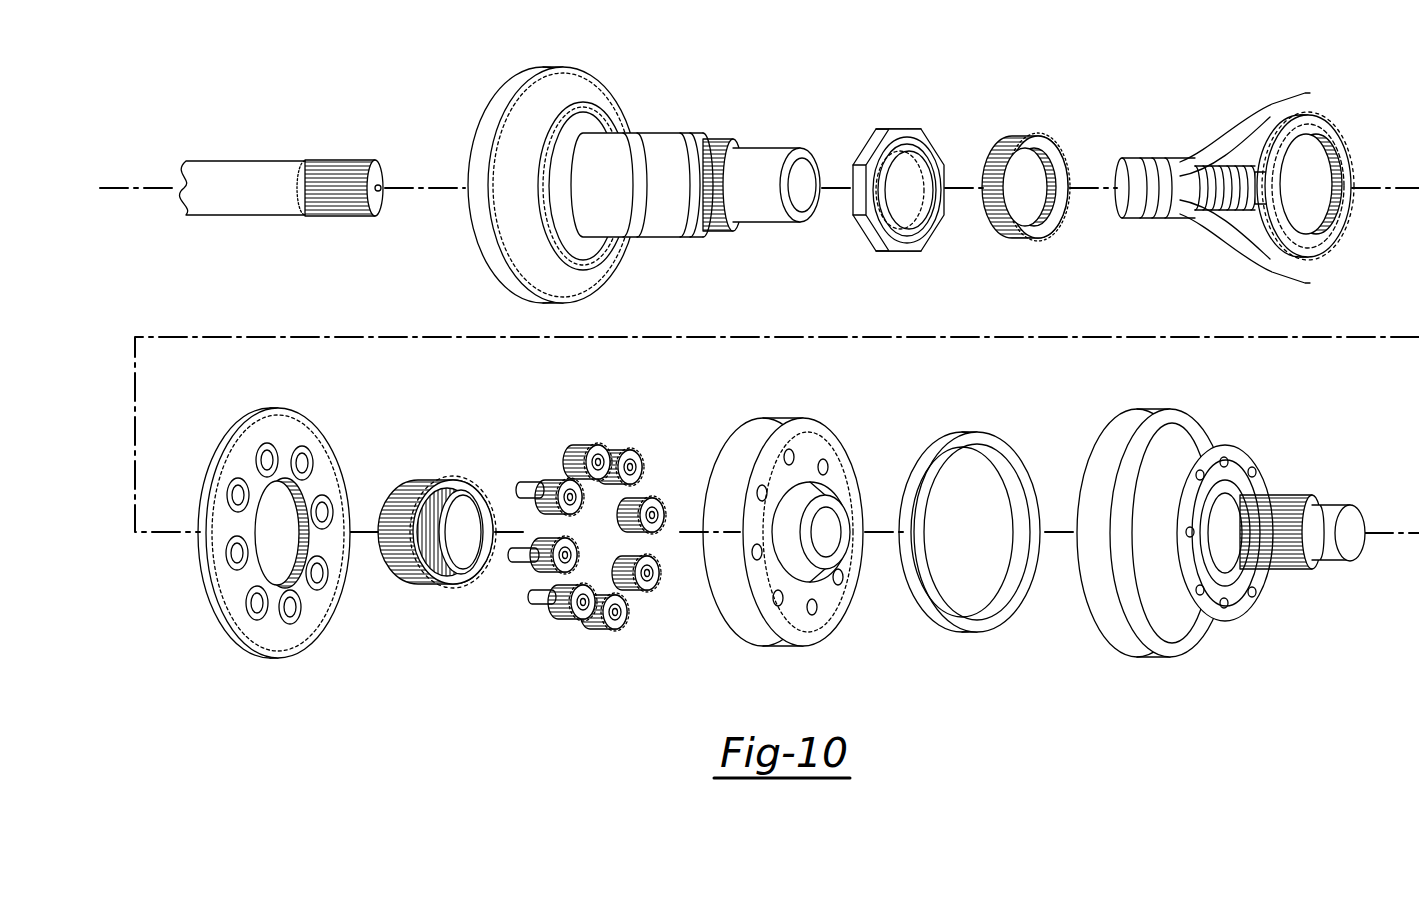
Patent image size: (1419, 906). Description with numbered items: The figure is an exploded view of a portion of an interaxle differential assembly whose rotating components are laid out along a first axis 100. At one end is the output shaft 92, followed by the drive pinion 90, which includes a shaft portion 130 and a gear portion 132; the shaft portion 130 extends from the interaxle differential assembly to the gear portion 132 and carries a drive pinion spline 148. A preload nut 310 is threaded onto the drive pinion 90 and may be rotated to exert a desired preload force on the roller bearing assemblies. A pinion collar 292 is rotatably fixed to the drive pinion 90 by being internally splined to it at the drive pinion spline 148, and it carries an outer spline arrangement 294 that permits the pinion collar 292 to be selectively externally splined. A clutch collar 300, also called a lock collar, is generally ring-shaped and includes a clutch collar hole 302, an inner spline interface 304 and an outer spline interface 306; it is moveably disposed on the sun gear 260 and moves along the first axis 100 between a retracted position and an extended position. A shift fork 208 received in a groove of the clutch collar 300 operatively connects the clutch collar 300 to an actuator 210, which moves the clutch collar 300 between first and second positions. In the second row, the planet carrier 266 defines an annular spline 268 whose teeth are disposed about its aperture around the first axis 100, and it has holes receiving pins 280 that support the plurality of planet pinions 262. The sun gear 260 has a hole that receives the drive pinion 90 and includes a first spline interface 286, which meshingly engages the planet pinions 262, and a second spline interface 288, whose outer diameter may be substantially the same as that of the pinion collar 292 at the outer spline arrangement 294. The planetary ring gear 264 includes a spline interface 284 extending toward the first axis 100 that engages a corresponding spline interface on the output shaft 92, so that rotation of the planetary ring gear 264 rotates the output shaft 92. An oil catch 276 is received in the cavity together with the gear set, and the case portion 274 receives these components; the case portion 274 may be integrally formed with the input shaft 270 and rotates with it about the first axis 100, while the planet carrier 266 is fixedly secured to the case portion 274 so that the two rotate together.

The output shaft 92 is at (245, 165).
The gear portion 132 is at (522, 90).
The shaft portion 130 is at (620, 248).
The drive pinion 90 is at (677, 138).
The drive pinion spline 148 is at (748, 230).
The preload nut 310 is at (900, 124).
The pinion collar 292 is at (1025, 182).
The outer spline arrangement 294 is at (1012, 240).
The actuator 210 is at (1190, 162).
The shift fork 208 is at (1216, 222).
The outer spline interface 306 is at (1285, 150).
The inner spline interface 304 is at (1320, 218).
The clutch collar hole 302 is at (1312, 207).
The clutch collar 300 is at (1282, 248).
The planet carrier 266 is at (236, 511).
The annular spline 268 is at (272, 572).
The sun gear 260 is at (437, 532).
The second spline interface 288 is at (400, 590).
The first spline interface 286 is at (446, 587).
The planet pinions 262 is at (573, 514).
The pins 280 is at (530, 570).
The planetary ring gear 264 is at (815, 516).
The spline interface 284 is at (825, 542).
The oil catch 276 is at (962, 432).
The case portion 274 is at (1160, 412).
The input shaft 270 is at (1336, 500).
The first axis 100 is at (1416, 535).